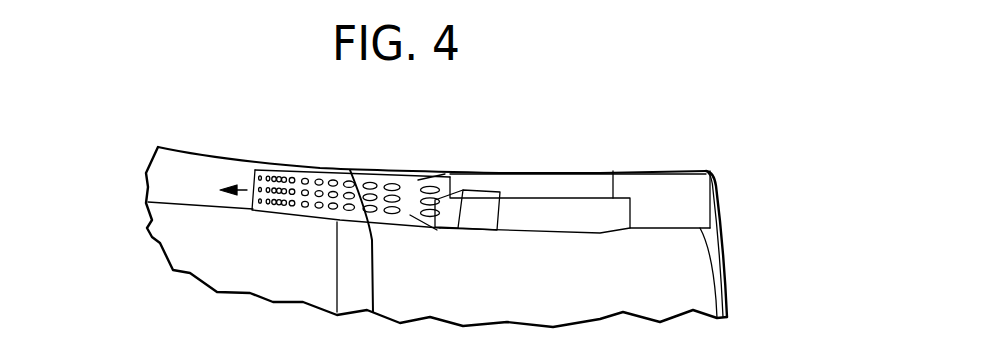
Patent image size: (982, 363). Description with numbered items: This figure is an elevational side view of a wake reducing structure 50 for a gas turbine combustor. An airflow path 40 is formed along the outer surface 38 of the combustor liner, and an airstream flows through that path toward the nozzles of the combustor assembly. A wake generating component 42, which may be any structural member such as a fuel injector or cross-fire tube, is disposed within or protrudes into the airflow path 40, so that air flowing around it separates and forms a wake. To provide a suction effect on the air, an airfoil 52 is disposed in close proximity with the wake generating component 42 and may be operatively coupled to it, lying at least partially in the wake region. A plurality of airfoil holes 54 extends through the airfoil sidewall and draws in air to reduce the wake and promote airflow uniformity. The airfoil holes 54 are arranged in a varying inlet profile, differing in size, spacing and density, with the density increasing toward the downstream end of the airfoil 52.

The outer surface 38 is at (683, 240).
The airflow path 40 is at (247, 190).
The wake generating component 42 is at (622, 183).
The wake reducing structure 50 is at (351, 176).
The airfoil 52 is at (452, 213).
The airfoil holes 54 is at (332, 183).